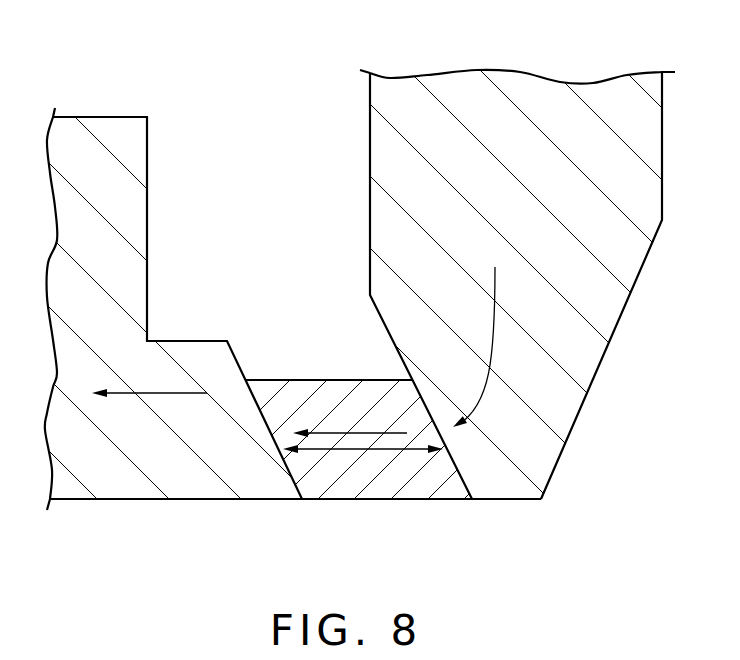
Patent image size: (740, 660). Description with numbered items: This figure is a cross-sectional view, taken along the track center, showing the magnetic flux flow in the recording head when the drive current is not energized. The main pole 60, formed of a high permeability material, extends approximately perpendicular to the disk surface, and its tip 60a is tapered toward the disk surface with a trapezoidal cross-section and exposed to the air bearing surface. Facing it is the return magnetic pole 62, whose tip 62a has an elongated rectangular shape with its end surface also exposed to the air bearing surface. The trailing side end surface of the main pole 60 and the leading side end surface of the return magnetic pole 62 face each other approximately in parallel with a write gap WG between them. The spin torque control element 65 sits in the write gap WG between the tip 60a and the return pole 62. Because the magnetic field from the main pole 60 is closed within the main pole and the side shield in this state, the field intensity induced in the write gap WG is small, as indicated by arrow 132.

The main pole 60 is at (540, 74).
The tip of the main pole 60a is at (505, 501).
The return magnetic pole 62 is at (99, 117).
The tip of the return magnetic pole 62a is at (143, 500).
The spin torque control element 65 is at (310, 380).
The arrow 132 is at (378, 434).
The write gap WG is at (357, 450).